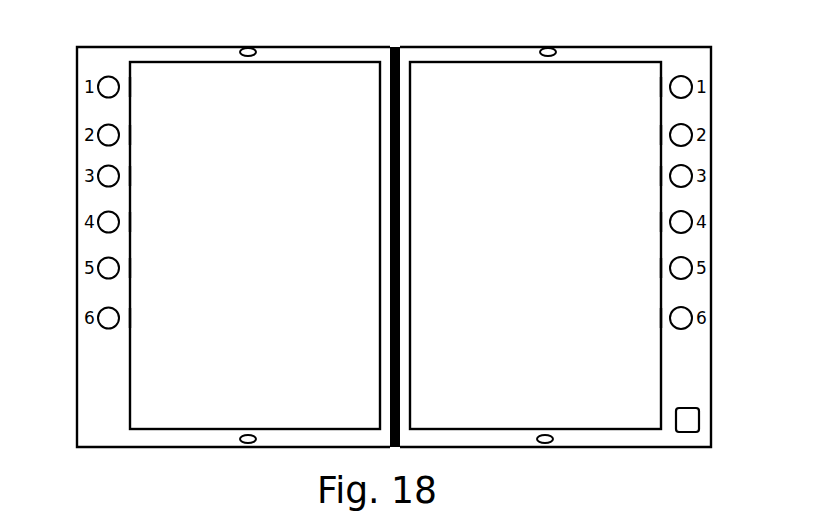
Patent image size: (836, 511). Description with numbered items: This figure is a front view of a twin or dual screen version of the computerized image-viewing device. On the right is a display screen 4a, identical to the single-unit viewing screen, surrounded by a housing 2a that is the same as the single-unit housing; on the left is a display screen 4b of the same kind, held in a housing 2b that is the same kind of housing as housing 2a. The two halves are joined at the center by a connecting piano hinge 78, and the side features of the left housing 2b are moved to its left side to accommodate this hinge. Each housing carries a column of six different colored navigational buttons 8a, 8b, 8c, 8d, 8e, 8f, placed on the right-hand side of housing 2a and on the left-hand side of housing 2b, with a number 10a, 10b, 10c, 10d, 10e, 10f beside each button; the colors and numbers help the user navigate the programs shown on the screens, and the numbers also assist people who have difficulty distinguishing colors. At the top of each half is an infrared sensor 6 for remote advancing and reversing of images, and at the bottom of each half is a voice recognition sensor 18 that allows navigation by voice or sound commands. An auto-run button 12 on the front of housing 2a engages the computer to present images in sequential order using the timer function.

The housing 2a is at (436, 55).
The housing 2b is at (113, 60).
The display screen 4a is at (496, 90).
The display screen 4b is at (212, 90).
The infrared sensor 6 is at (248, 47).
The piano hinge 78 is at (393, 45).
The navigational button 8a is at (120, 87).
The navigational button 8b is at (120, 135).
The navigational button 8c is at (120, 176).
The navigational button 8d is at (120, 222).
The navigational button 8e is at (120, 268).
The navigational button 8f is at (120, 318).
The number 10a is at (81, 87).
The number 10b is at (81, 135).
The number 10c is at (81, 176).
The number 10d is at (81, 222).
The number 10e is at (81, 268).
The number 10f is at (81, 318).
The auto-run button 12 is at (700, 420).
The voice recognition sensor 18 is at (247, 447).